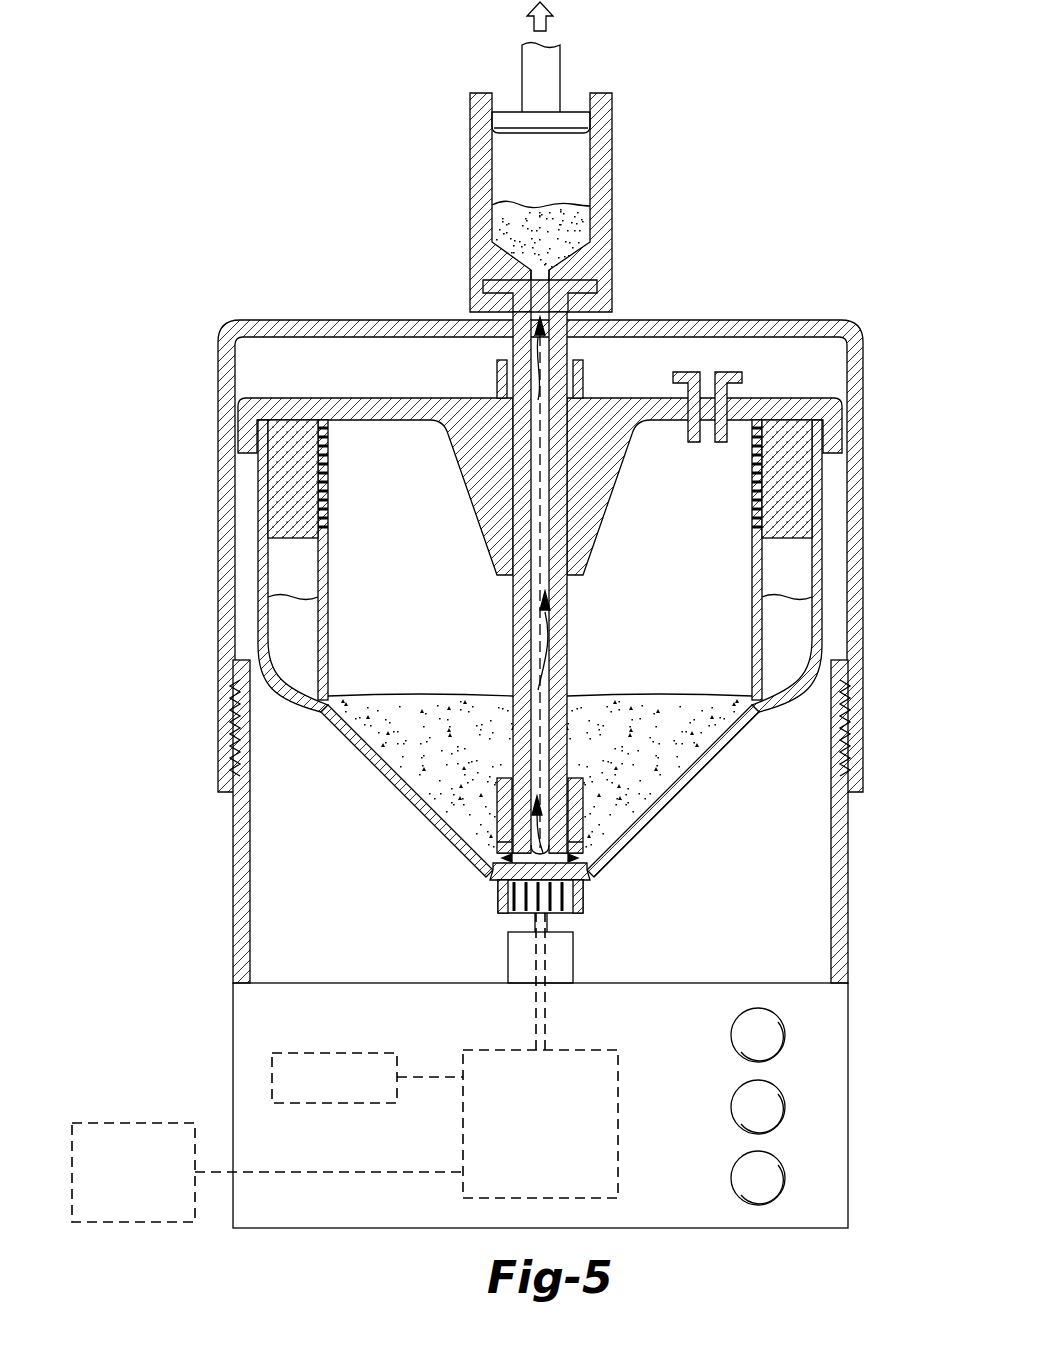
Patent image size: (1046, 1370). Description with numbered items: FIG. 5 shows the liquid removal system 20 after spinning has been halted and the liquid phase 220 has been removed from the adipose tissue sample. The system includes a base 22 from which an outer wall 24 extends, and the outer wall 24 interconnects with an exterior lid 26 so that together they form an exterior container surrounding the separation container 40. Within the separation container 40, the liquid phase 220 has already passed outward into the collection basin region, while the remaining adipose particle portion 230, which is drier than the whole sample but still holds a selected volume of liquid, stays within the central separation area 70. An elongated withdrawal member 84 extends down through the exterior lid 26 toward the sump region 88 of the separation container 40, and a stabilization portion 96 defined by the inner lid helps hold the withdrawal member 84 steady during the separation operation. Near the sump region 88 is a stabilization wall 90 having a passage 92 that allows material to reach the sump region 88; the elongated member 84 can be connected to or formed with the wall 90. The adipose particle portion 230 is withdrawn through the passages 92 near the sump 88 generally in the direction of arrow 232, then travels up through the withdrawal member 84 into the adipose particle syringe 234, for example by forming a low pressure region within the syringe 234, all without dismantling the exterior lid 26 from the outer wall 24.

The liquid removal system 20 is at (303, 191).
The base 22 is at (840, 1062).
The outer wall 24 is at (843, 893).
The exterior lid 26 is at (863, 526).
The separation container 40 is at (399, 789).
The central separation area 70 is at (666, 620).
The elongated member 84 is at (513, 618).
The sump region 88 is at (478, 841).
The stabilization wall 90 is at (585, 792).
The passage 92 is at (497, 857).
The stabilization portion 96 is at (602, 500).
The liquid phase 220 is at (310, 656).
The adipose particle portion 230 is at (578, 240).
The arrow 232 is at (531, 357).
The adipose particle syringe 234 is at (612, 144).